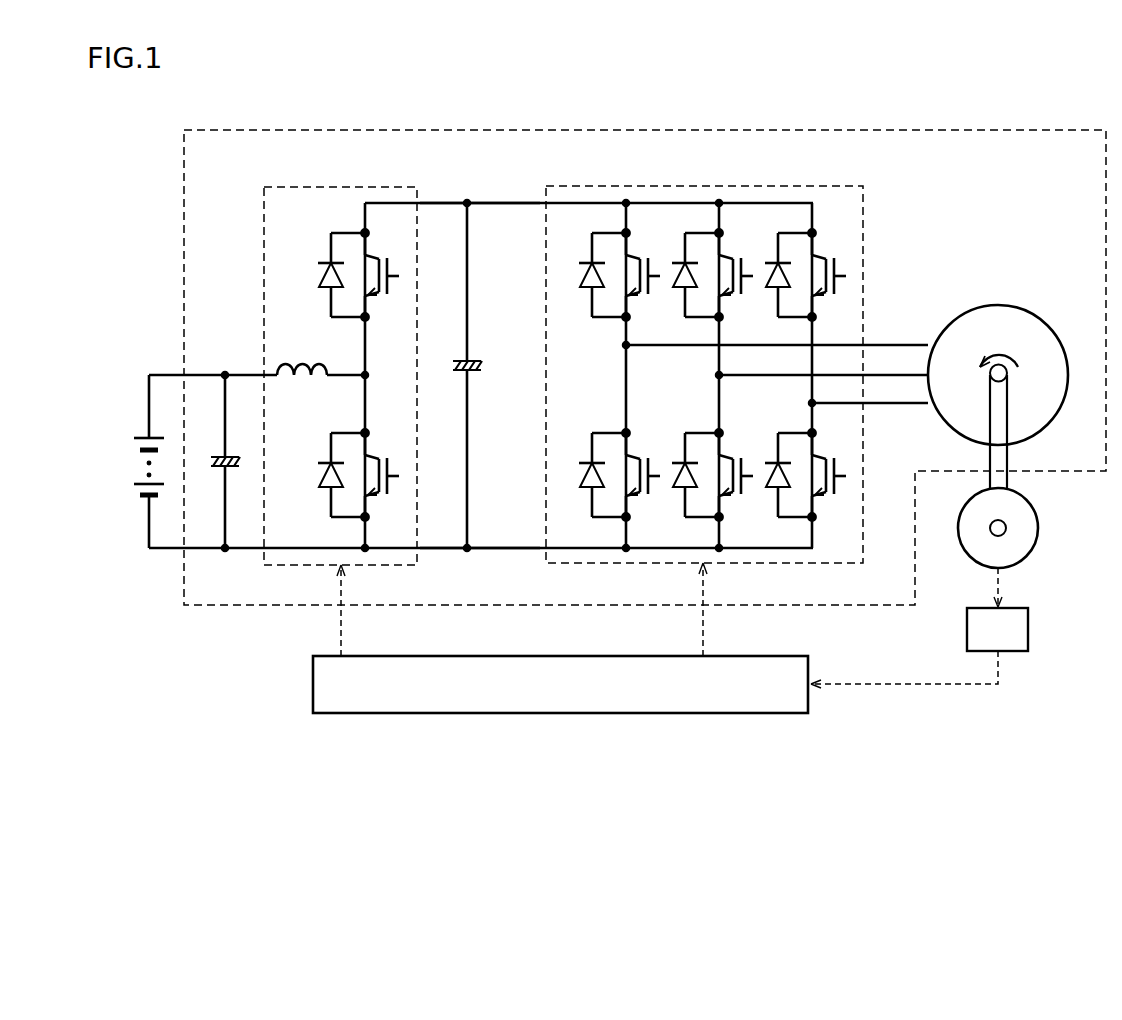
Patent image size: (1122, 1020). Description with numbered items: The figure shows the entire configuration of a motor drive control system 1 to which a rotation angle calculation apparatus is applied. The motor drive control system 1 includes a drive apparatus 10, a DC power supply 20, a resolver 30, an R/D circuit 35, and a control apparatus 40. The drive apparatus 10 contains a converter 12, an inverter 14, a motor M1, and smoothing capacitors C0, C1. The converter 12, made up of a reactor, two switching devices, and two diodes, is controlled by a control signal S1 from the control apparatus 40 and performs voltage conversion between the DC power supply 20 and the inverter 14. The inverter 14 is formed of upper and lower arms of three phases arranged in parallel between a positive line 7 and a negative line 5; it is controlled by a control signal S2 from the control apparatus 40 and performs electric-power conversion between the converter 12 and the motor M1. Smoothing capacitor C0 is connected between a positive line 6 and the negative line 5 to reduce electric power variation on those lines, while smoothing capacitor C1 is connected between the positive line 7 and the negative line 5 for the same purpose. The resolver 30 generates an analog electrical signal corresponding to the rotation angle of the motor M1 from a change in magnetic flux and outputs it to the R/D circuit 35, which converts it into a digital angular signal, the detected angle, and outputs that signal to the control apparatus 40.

The motor drive control system 1 is at (627, 96).
The drive apparatus 10 is at (946, 130).
The converter 12 is at (344, 187).
The inverter 14 is at (697, 186).
The positive line 7 is at (501, 202).
The negative line 5 is at (437, 565).
The positive line 6 is at (240, 374).
The DC power supply 20 is at (138, 437).
The resolver 30 is at (1040, 530).
The resolver-to-digital conversion circuit 35 is at (1028, 632).
The control apparatus 40 is at (716, 713).
The smoothing capacitor C0 is at (462, 360).
The smoothing capacitor C1 is at (222, 455).
The motor M1 is at (998, 305).
The control signal S1 is at (328, 610).
The control signal S2 is at (691, 609).